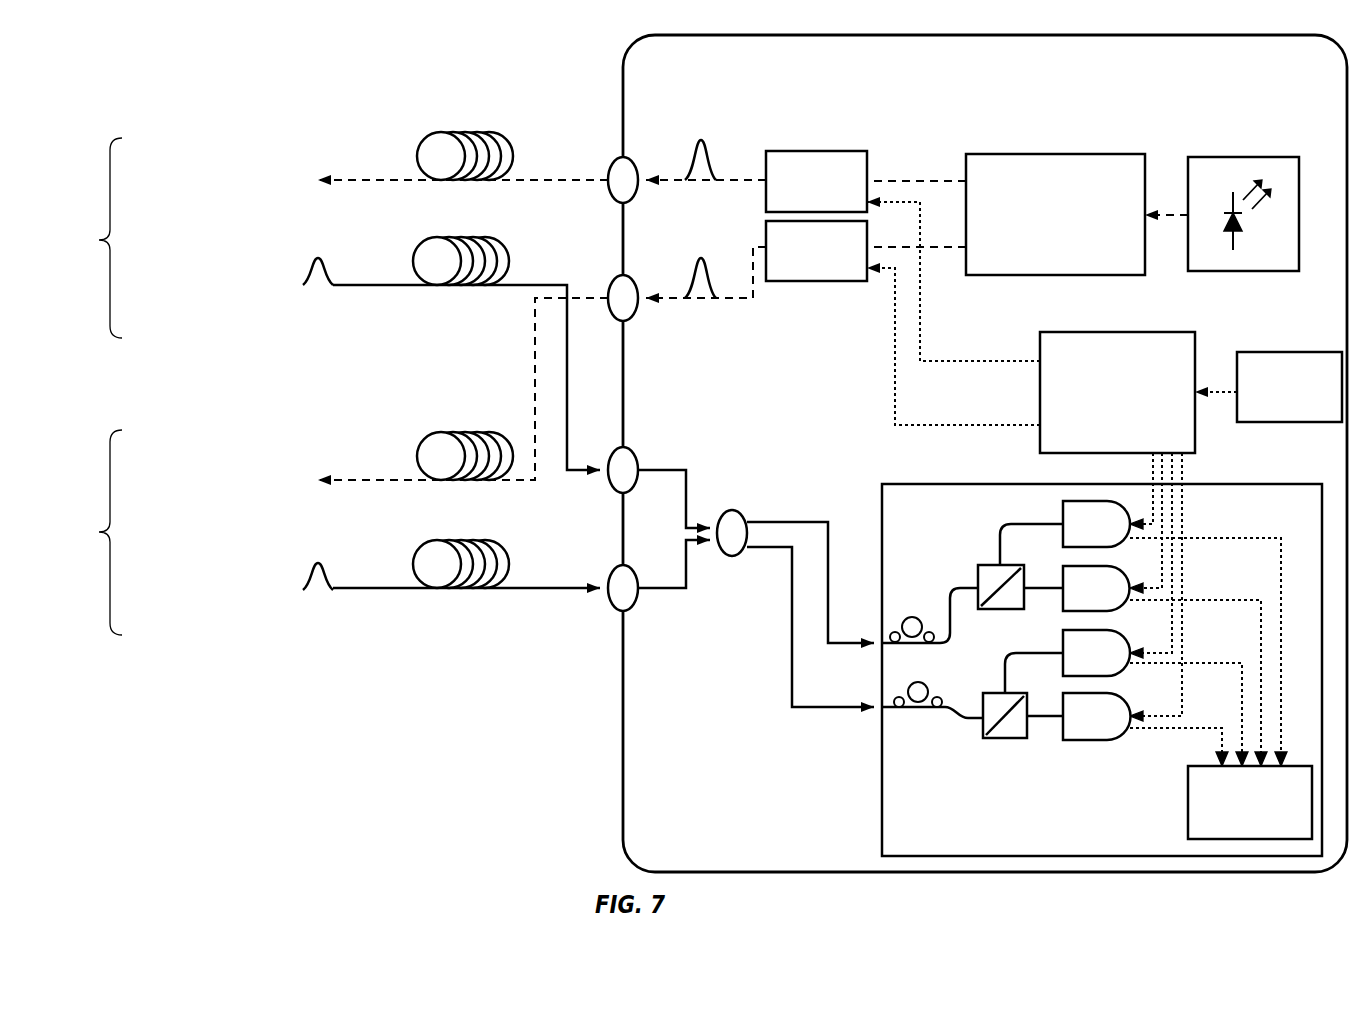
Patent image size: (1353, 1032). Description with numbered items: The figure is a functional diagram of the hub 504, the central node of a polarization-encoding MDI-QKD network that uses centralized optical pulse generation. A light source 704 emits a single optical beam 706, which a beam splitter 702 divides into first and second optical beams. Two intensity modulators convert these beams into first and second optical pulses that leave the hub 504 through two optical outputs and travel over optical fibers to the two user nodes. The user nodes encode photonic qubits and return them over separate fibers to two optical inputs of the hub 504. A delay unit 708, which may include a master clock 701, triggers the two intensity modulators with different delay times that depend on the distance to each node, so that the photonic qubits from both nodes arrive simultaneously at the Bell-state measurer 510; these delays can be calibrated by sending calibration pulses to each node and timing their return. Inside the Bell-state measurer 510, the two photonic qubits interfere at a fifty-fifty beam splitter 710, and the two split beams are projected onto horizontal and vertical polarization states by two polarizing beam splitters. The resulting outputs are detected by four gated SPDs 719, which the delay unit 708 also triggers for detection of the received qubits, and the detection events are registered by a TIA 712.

The hub 504 is at (985, 453).
The 50:50 beam splitter 710 is at (732, 556).
The beam splitter 702 is at (1055, 214).
The light source 704 is at (1268, 155).
The optical beam 706 is at (1168, 208).
The delay unit 708 is at (1031, 461).
The master clock 701 is at (1268, 387).
The Bell-state measurer 510 is at (1102, 670).
The gated SPDs 719 is at (1112, 740).
The TIA 712 is at (1250, 802).